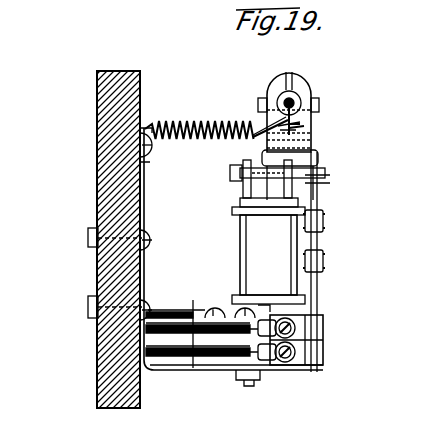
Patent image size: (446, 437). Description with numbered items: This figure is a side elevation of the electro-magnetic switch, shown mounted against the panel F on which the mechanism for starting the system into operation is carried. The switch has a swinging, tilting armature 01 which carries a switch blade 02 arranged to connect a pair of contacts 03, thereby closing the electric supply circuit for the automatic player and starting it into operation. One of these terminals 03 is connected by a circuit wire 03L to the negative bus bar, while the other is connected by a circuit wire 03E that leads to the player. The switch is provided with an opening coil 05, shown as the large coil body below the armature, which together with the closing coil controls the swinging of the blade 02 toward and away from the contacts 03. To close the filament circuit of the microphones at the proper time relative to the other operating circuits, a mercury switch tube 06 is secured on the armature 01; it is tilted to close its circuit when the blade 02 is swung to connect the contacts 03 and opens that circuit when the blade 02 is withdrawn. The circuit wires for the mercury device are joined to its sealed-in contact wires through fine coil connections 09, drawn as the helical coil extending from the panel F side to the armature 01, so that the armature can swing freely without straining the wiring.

The panel F is at (100, 71).
The swinging armature 01 is at (318, 160).
The switch blade 02 is at (319, 283).
The contacts 03 is at (326, 356).
The circuit wire 03L is at (175, 325).
The circuit wire 03E is at (218, 364).
The opening coil 05 is at (246, 262).
The mercury switch tube 06 is at (300, 98).
The fine coil connections 09 is at (228, 108).